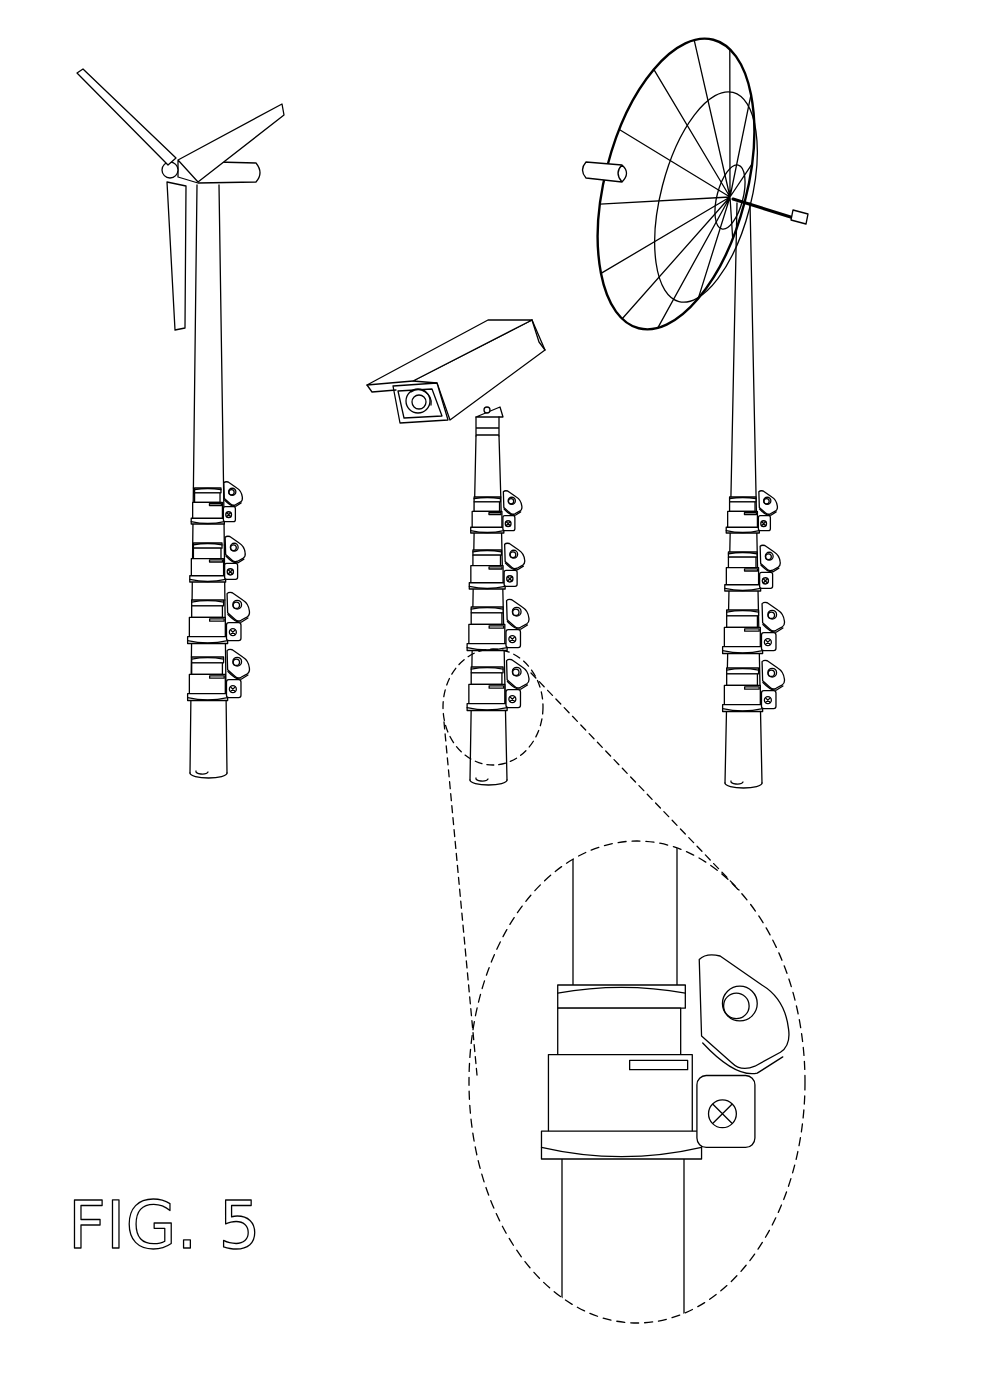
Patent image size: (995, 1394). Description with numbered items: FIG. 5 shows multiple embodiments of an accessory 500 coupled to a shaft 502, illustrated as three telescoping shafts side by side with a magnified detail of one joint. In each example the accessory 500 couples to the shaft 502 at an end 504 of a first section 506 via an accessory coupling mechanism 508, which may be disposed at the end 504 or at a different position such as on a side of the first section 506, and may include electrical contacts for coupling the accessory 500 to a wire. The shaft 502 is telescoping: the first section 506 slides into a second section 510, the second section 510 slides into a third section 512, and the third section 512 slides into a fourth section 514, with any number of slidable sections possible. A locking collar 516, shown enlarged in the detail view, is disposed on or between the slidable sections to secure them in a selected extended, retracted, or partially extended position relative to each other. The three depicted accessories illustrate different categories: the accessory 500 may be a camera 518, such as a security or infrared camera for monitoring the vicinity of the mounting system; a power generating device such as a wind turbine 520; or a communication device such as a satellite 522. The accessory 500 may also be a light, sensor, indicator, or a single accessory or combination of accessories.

The accessory 500 is at (132, 37).
The shaft 502 is at (210, 359).
The end 504 is at (222, 186).
The first section 506 is at (218, 258).
The accessory coupling mechanism 508 is at (490, 412).
The second section 510 is at (218, 470).
The third section 512 is at (218, 530).
The fourth section 514 is at (218, 585).
The locking collar 516 is at (448, 1141).
The camera 518 is at (579, 370).
The wind turbine 520 is at (342, 148).
The satellite 522 is at (795, 147).